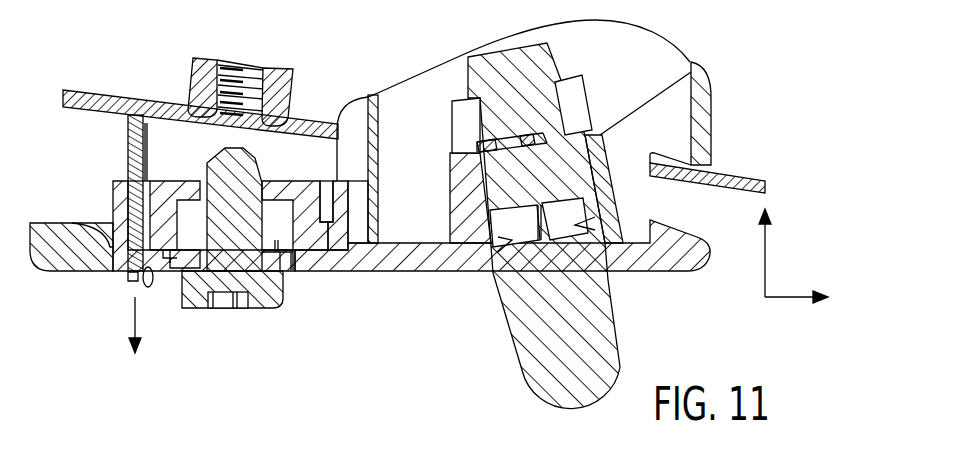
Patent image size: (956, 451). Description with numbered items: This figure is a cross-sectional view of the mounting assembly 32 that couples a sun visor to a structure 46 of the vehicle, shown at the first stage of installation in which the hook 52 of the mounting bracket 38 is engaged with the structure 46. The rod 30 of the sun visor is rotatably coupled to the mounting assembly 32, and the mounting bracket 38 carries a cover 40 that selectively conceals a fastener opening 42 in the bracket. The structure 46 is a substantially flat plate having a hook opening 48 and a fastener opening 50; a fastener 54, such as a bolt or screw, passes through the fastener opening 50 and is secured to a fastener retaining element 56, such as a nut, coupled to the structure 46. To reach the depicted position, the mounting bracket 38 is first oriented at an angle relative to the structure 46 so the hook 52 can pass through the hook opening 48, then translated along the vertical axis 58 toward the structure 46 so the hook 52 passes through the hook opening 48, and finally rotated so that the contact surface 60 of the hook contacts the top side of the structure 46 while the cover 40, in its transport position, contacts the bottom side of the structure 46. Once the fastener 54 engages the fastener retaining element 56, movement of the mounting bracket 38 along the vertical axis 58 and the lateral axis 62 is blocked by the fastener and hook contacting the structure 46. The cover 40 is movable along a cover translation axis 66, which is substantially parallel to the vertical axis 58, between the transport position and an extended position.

The rod 30 is at (622, 348).
The mounting assembly 32 is at (733, 74).
The mounting bracket 38 is at (702, 265).
The cover 40 is at (130, 143).
The fastener opening 42 is at (291, 306).
The structure 46 is at (744, 173).
The hook opening 48 is at (356, 90).
The fastener opening 50 is at (178, 94).
The hook 52 is at (698, 78).
The fastener 54 is at (185, 309).
The fastener retaining element 56 is at (286, 80).
The vertical axis 58 is at (767, 262).
The contact surface 60 is at (708, 165).
The lateral axis 62 is at (788, 297).
The cover translation axis 66 is at (135, 317).